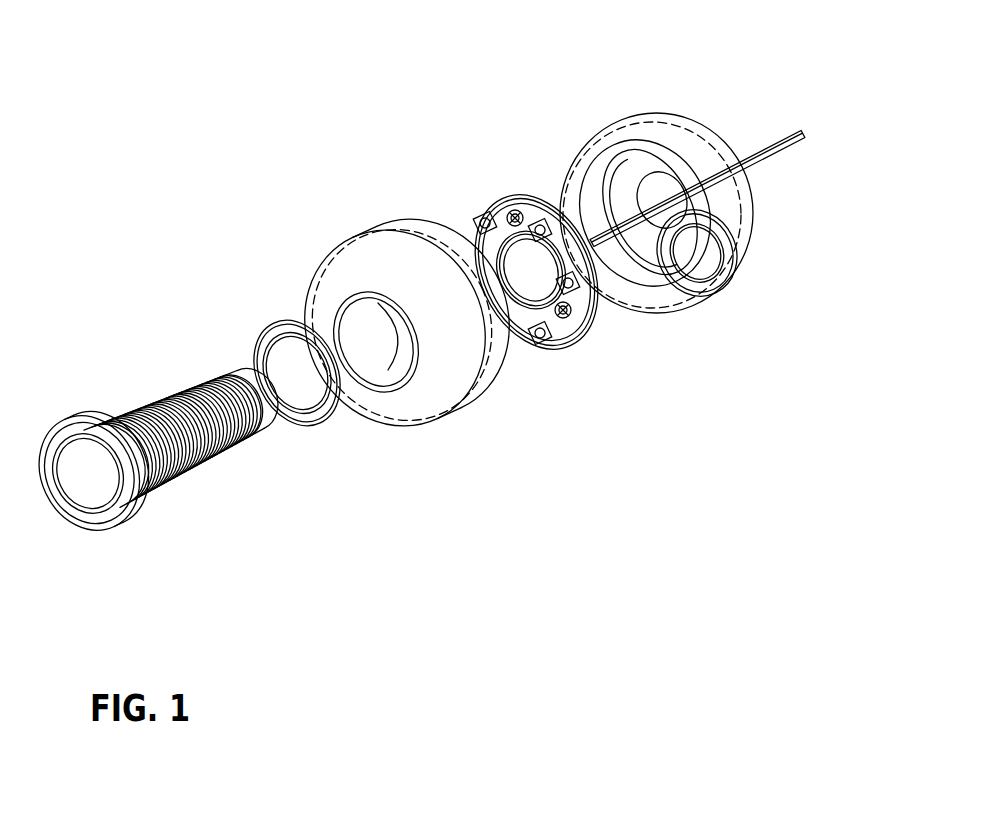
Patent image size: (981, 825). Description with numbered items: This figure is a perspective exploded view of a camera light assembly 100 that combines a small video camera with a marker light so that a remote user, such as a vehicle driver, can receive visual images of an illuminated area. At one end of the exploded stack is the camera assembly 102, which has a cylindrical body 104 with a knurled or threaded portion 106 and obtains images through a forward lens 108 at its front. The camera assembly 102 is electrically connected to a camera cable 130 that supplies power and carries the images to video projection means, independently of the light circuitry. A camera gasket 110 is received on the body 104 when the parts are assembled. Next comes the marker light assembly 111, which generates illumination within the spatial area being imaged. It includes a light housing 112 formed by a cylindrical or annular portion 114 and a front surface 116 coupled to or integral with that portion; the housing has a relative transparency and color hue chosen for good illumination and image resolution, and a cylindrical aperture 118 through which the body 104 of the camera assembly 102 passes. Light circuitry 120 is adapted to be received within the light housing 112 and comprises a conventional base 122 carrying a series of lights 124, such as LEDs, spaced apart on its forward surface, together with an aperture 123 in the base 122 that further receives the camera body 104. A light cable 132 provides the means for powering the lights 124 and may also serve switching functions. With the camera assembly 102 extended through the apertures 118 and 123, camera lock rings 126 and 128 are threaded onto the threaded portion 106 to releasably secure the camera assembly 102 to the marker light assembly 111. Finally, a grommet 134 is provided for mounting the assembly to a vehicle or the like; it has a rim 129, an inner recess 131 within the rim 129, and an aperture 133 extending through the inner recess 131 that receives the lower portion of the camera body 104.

The camera light assembly 100 is at (627, 82).
The camera assembly 102 is at (145, 380).
The cylindrical body 104 is at (260, 423).
The knurled or threaded portion 106 is at (175, 482).
The forward lens 108 is at (90, 497).
The camera gasket 110 is at (267, 325).
The marker light assembly 111 is at (438, 148).
The light housing 112 is at (453, 395).
The cylindrical or annular portion 114 is at (400, 242).
The front surface 116 is at (408, 407).
The cylindrical aperture 118 is at (373, 355).
The light circuitry 120 is at (547, 365).
The base 122 is at (572, 268).
The aperture 123 is at (543, 284).
The lights 124 is at (484, 217).
The camera lock ring 126 is at (703, 288).
The camera lock ring 128 is at (747, 245).
The rim 129 is at (607, 140).
The camera cable 130 is at (757, 153).
The inner recess 131 is at (688, 164).
The light cable 132 is at (771, 167).
The aperture 133 is at (642, 240).
The grommet 134 is at (679, 158).